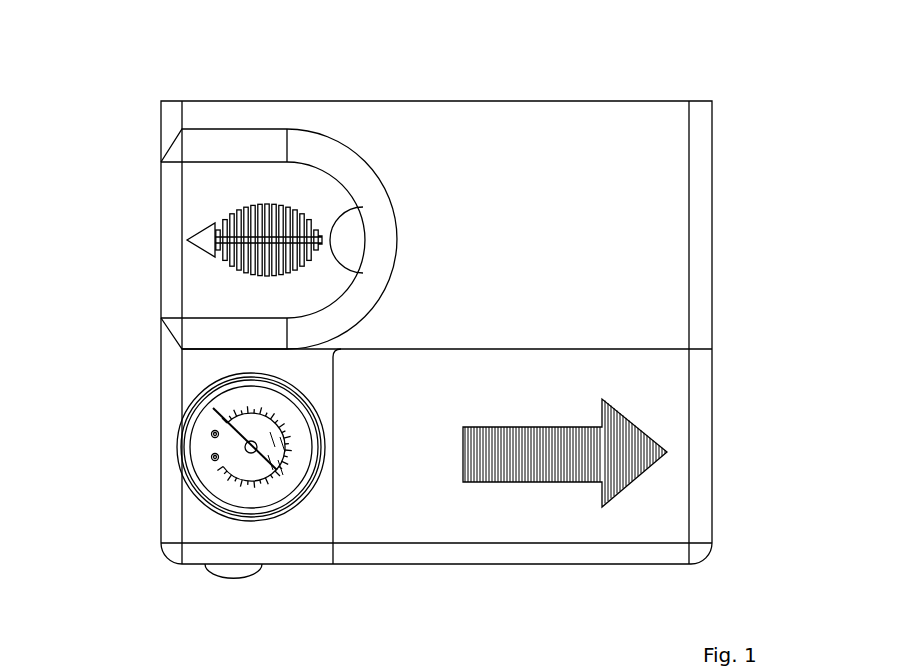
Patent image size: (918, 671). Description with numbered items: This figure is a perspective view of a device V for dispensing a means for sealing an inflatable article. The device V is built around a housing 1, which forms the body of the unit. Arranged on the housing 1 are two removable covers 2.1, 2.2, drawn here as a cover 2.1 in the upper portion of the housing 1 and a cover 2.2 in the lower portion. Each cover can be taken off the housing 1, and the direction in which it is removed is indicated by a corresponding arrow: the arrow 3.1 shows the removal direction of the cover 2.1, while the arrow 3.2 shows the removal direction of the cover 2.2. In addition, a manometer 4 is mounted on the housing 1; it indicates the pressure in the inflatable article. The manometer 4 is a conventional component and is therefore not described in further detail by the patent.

The housing 1 is at (437, 130).
The device for dispensing a means for sealing an inflatable article V is at (722, 82).
The removable cover 2.1 is at (207, 190).
The arrow 3.1 is at (187, 240).
The removable cover 2.2 is at (458, 515).
The arrow 3.2 is at (613, 466).
The manometer 4 is at (222, 472).